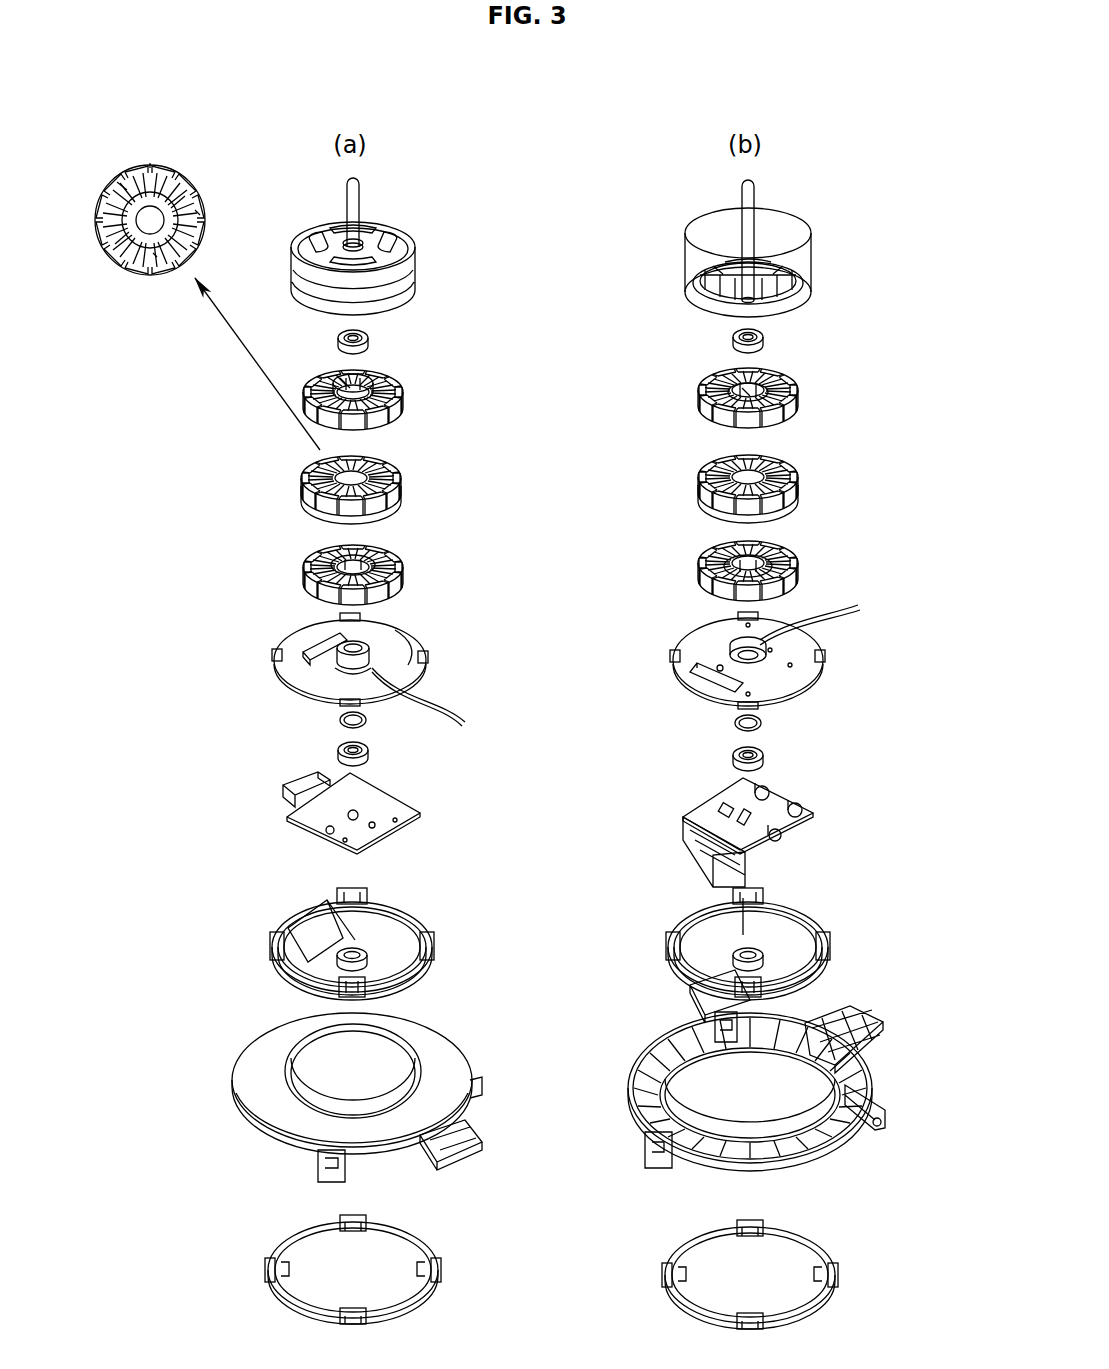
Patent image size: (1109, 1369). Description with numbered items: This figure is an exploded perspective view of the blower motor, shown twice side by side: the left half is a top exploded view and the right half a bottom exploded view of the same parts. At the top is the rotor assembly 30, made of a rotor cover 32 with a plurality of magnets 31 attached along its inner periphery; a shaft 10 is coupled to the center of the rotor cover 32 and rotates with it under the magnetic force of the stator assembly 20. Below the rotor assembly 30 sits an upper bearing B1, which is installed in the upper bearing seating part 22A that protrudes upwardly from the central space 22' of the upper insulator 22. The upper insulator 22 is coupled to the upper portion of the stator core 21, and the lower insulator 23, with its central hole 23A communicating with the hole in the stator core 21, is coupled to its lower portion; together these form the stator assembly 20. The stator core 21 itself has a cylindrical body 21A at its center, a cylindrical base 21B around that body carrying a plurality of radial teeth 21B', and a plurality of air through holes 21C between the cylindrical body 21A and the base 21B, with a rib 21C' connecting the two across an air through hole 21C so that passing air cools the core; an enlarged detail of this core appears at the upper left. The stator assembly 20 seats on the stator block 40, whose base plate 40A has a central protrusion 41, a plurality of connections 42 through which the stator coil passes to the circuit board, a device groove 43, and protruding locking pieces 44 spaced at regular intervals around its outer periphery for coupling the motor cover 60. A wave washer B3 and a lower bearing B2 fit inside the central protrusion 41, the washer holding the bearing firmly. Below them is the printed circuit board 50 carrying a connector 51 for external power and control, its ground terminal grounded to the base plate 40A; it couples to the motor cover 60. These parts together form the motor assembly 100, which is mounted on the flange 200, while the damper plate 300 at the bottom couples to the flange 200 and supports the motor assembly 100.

The shaft 10 is at (360, 203).
The stator assembly 20 is at (500, 402).
The stator core 21 is at (403, 495).
The cylindrical body 21A is at (157, 257).
The base 21B is at (522, 364).
The teeth 21B' is at (508, 323).
The air through holes 21C is at (473, 325).
The rib 21C' is at (478, 314).
The upper insulator 22 is at (550, 402).
The upper bearing seating part 22A is at (385, 380).
The central space 22' is at (552, 365).
The lower insulator 23 is at (395, 562).
The central hole 23A is at (312, 573).
The rotor assembly 30 is at (425, 268).
The magnets 31 is at (772, 293).
The rotor cover 32 is at (295, 282).
The stator block 40 is at (677, 645).
The base plate 40A is at (407, 637).
The central protrusion 41 is at (360, 655).
The connections 42 is at (629, 658).
The device groove 43 is at (310, 647).
The protruding locking piece 44 is at (363, 620).
The printed circuit board 50 is at (680, 813).
The connector 51 is at (287, 820).
The motor cover 60 is at (455, 940).
The motor assembly 100 is at (893, 945).
The flange 200 is at (468, 1040).
The damper plate 300 is at (642, 1272).
The upper bearing B1 is at (370, 342).
The lower bearing B2 is at (373, 757).
The wave washer B3 is at (367, 725).